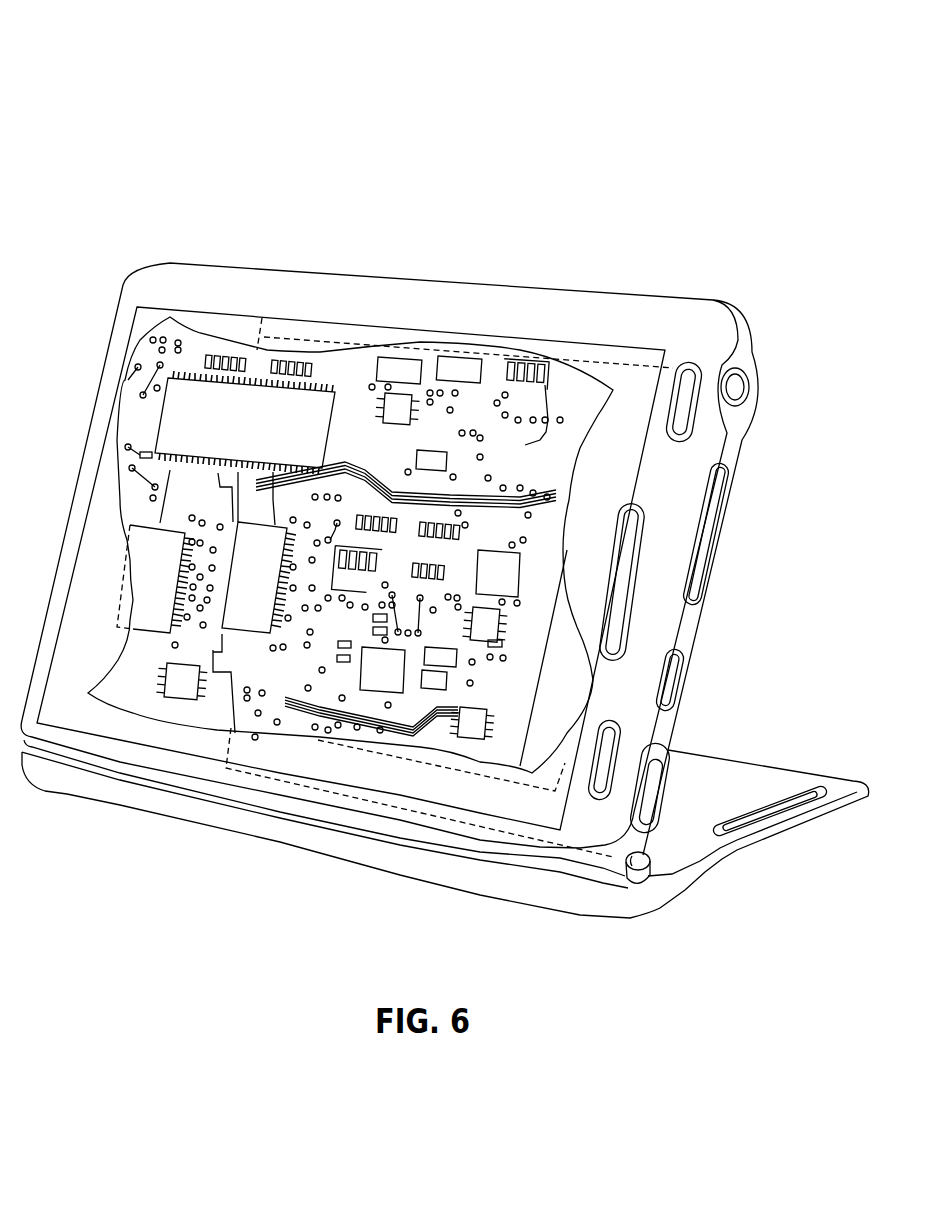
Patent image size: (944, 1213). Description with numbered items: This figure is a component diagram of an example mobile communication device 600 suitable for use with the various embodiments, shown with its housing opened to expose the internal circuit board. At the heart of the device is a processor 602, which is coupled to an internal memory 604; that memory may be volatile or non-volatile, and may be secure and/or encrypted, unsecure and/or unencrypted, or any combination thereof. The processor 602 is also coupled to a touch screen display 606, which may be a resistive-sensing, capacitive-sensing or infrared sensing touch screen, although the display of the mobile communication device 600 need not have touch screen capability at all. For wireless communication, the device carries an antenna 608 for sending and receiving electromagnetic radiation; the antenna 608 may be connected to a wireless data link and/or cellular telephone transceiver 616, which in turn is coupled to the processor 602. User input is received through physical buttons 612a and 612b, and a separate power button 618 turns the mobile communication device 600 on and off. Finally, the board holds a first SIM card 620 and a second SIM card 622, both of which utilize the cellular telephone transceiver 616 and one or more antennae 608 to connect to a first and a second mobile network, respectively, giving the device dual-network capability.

The mobile communication device 600 is at (253, 157).
The processor 602 is at (268, 430).
The internal memory 604 is at (179, 557).
The touch screen display 606 is at (517, 337).
The antenna 608 is at (642, 874).
The physical button 612a is at (690, 407).
The physical button 612b is at (614, 747).
The cellular telephone transceiver 616 is at (283, 567).
The power button 618 is at (744, 385).
The first SIM card 620 is at (400, 357).
The second SIM card 622 is at (460, 357).